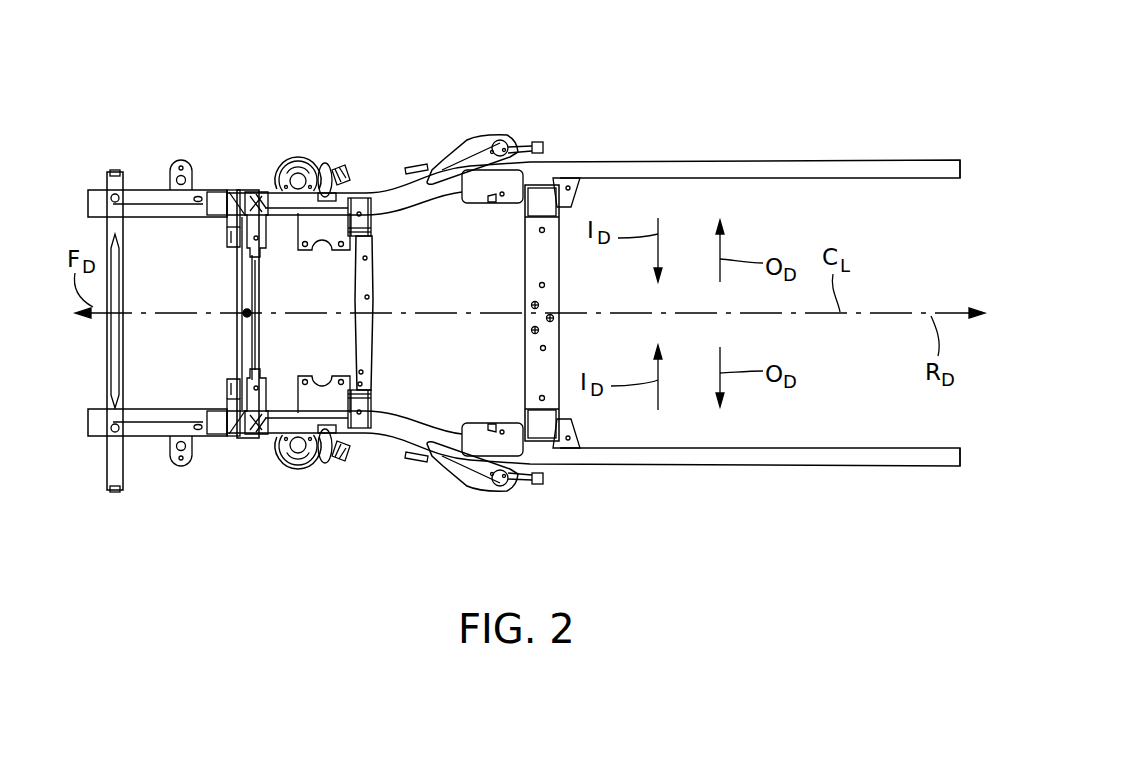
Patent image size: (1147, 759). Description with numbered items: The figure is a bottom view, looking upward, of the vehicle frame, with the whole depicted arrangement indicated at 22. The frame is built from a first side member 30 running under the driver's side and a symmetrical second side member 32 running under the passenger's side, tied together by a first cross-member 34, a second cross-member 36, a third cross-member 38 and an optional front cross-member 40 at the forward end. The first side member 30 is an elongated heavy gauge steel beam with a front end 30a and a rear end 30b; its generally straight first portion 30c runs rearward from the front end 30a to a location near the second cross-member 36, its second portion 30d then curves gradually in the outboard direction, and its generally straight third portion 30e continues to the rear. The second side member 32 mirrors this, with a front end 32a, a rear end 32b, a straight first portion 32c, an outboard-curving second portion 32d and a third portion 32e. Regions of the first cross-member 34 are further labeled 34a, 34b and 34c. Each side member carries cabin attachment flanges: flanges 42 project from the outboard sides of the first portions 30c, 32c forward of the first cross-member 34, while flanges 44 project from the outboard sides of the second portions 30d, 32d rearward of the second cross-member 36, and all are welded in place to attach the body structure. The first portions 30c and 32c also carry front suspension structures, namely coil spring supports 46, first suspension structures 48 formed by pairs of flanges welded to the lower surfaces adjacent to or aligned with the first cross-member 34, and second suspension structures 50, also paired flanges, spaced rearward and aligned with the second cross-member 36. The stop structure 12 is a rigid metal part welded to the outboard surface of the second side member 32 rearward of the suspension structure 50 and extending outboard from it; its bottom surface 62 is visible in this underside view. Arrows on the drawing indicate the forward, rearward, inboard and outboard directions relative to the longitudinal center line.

The stop structure 12 is at (436, 148).
The vehicle frame assembly 22 is at (622, 51).
The first side member 30 is at (798, 160).
The front end 30a is at (88, 204).
The rear end 30b is at (960, 178).
The first portion 30c is at (88, 116).
The second portion 30d is at (403, 99).
The third portion 30e is at (962, 117).
The second side member 32 is at (798, 466).
The front end 32a is at (88, 422).
The rear end 32b is at (960, 448).
The first portion 32c is at (88, 508).
The second portion 32d is at (412, 533).
The third portion 32e is at (962, 510).
The first cross-member 34 is at (238, 301).
The first end of first cross member 34a is at (236, 233).
The second end of first cross member 34b is at (234, 396).
The central portion of first cross member 34c is at (250, 280).
The second cross-member 36 is at (368, 342).
The third cross-member 38 is at (538, 258).
The front cross-member 40 is at (123, 335).
The vehicle body attachment flange 42 is at (186, 171).
The vehicle body attachment flange 44 is at (501, 140).
The coil spring support 46 is at (284, 158).
The first suspension structure 48 is at (252, 200).
The second suspension structure 50 is at (357, 197).
The bottom surface 62 is at (456, 158).